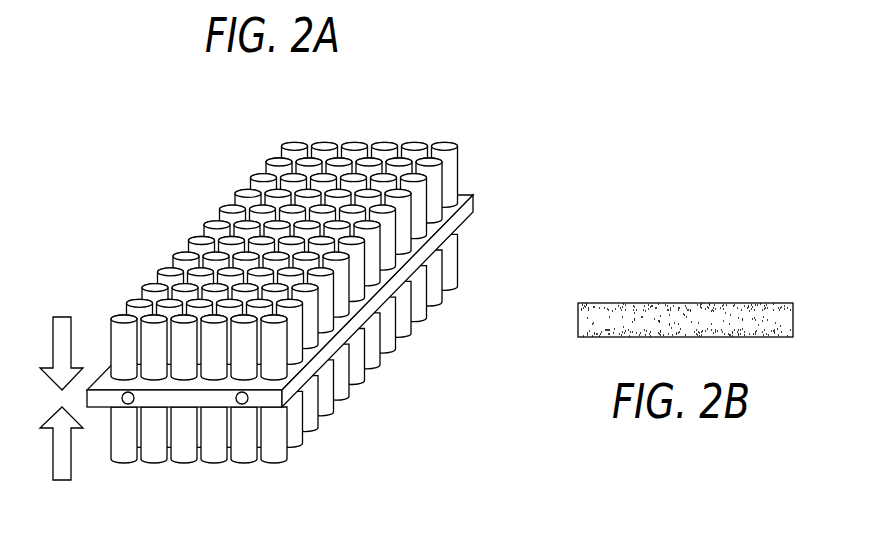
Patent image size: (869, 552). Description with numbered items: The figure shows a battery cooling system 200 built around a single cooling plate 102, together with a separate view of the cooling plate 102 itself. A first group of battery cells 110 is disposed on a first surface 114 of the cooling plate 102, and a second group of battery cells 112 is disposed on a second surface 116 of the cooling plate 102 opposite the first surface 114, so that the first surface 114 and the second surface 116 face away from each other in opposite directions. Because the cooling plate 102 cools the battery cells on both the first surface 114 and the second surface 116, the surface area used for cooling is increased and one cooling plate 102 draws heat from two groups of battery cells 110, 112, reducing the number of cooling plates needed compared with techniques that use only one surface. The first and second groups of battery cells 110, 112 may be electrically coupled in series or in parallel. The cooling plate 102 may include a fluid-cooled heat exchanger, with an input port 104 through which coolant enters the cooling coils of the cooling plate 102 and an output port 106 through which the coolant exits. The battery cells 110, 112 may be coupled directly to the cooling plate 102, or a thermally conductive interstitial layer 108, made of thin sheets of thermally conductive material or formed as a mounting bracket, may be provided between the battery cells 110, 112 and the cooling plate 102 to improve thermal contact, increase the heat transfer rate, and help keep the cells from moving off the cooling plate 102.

In FIG. 2A, the battery cooling system 200 is at (100, 185).
In FIG. 2A, the cooling plate 102 is at (334, 299).
In FIG. 2B, the cooling plate 102 is at (749, 313).
In FIG. 2A, the input port 104 is at (114, 410).
In FIG. 2A, the output port 106 is at (207, 437).
In FIG. 2A, the thermally conductive interstitial layer 108 is at (403, 248).
In FIG. 2A, the first group of battery cells 110 is at (247, 218).
In FIG. 2A, the second group of battery cells 112 is at (370, 347).
In FIG. 2A, the first surface 114 is at (100, 388).
In FIG. 2A, the second surface 116 is at (97, 413).